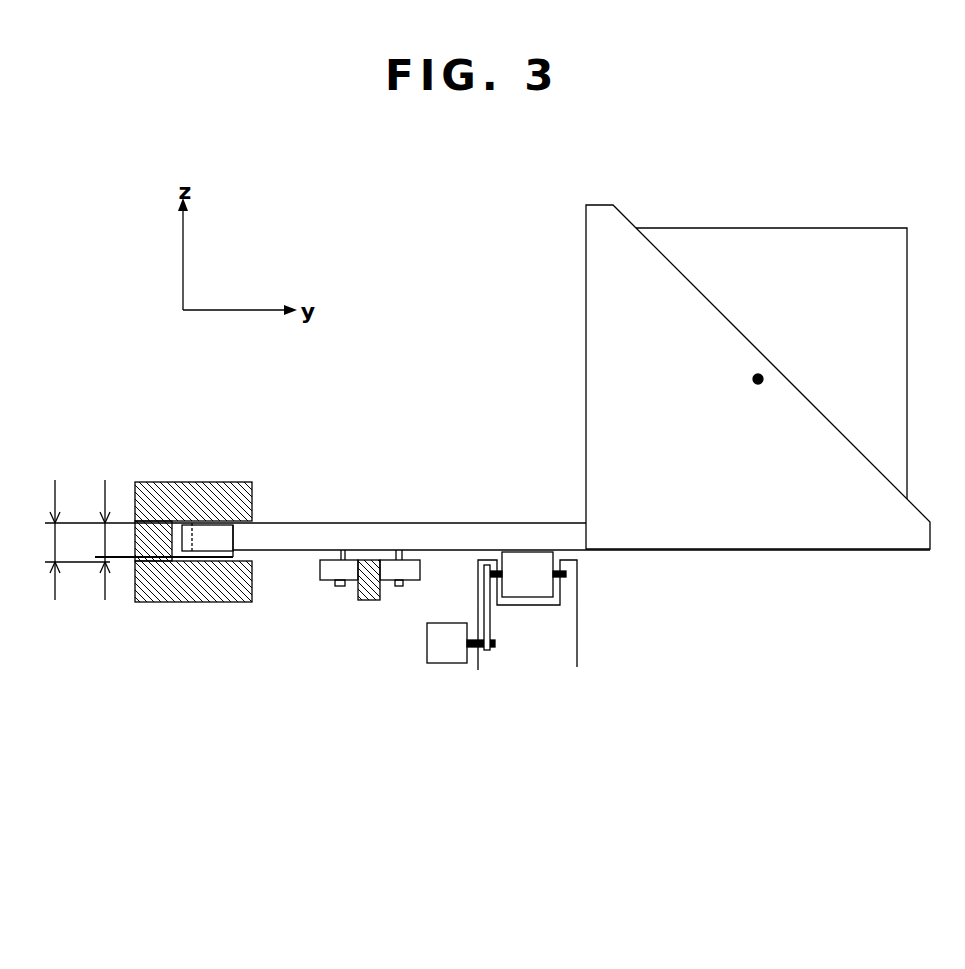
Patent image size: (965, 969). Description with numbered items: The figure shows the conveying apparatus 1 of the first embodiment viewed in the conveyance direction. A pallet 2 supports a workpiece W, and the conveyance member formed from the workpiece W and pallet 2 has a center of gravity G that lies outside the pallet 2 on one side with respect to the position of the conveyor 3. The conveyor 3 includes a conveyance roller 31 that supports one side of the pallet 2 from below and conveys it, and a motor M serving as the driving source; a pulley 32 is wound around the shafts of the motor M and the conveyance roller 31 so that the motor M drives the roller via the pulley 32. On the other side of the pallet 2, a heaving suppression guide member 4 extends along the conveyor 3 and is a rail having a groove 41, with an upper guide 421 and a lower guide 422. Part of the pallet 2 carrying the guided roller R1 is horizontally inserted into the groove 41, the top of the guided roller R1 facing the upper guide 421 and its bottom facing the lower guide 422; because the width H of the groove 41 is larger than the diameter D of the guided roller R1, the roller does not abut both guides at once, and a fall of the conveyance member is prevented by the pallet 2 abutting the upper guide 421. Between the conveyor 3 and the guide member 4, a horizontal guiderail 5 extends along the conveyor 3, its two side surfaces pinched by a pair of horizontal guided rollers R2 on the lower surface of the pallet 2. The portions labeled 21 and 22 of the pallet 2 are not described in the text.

The conveying apparatus 1 is at (512, 580).
The pallet 2 is at (512, 529).
The first portion of strip 21 is at (410, 523).
The second portion of strip 22 is at (761, 551).
The conveyor 3 is at (532, 582).
The conveyance roller 31 is at (530, 551).
The pulley 32 is at (487, 651).
The heaving suppression guide member 4 is at (236, 532).
The groove 41 is at (248, 553).
The upper guide 421 is at (220, 521).
The lower guide 422 is at (203, 602).
The horizontal guiderail 5 is at (368, 601).
The motor M is at (448, 664).
The guided roller R1 is at (234, 538).
The horizontal guided rollers R2 is at (332, 582).
The center of gravity G is at (752, 381).
The workpiece W is at (758, 228).
The width of the groove H is at (89, 529).
The diameter of the guided roller D is at (105, 529).